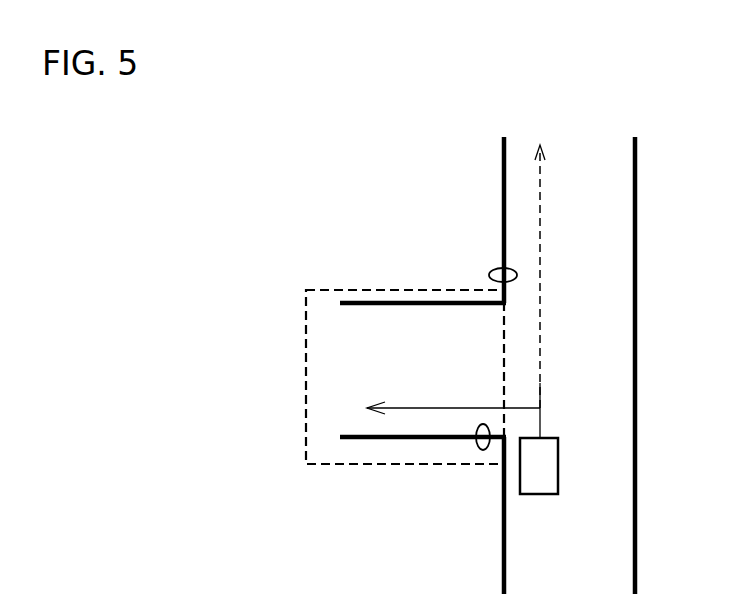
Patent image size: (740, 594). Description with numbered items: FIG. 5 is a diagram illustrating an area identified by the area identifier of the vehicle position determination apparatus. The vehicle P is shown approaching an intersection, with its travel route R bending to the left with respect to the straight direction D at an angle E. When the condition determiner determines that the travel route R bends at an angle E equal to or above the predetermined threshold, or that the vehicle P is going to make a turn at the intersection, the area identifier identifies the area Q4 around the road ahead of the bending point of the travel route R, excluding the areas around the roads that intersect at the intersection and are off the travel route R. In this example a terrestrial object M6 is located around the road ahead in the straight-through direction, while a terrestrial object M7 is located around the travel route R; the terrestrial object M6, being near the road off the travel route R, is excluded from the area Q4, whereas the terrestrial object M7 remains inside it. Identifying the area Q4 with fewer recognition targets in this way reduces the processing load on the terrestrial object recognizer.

The area Q4 is at (380, 464).
The straight direction D is at (541, 235).
The travel route R is at (433, 408).
The angle E is at (540, 383).
The vehicle P is at (558, 465).
The terrestrial object M6 is at (497, 268).
The terrestrial object M7 is at (483, 450).